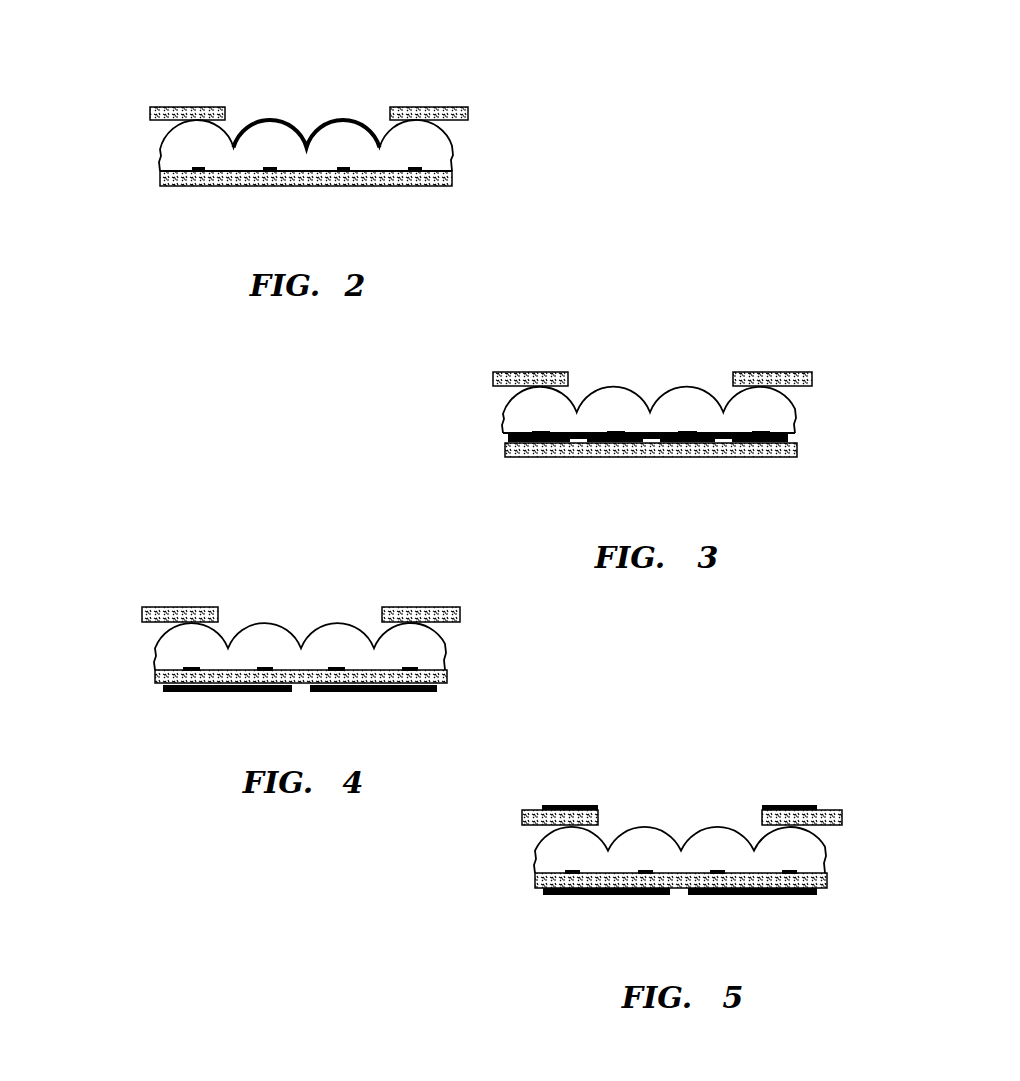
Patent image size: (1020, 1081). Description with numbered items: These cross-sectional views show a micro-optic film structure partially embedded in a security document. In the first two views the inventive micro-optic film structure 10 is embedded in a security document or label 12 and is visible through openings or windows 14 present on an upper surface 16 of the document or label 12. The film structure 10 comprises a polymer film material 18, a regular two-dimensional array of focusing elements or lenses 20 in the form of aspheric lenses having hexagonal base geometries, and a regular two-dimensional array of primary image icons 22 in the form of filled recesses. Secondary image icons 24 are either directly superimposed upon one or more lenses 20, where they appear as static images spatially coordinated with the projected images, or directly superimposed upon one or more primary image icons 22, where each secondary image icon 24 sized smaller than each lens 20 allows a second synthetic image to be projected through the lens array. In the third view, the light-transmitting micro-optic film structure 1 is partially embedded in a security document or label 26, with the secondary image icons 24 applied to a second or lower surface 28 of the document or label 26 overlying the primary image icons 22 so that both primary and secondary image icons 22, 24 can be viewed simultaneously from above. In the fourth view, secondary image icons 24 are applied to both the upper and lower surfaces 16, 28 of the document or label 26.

In FIG. 4, the micro-optic film structure 1 is at (156, 646).
In FIG. 5, the micro-optic film structure 1 is at (536, 849).
In FIG. 2, the micro-optic film structure 10 is at (300, 127).
In FIG. 3, the micro-optic film structure 10 is at (637, 389).
In FIG. 2, the security document or label 12 is at (468, 117).
In FIG. 3, the security document or label 12 is at (812, 382).
In FIG. 2, the openings or windows 14 is at (273, 93).
In FIG. 3, the openings or windows 14 is at (649, 349).
In FIG. 2, the upper surface 16 is at (195, 107).
In FIG. 3, the upper surface 16 is at (533, 372).
In FIG. 4, the upper surface 16 is at (183, 607).
In FIG. 5, the upper surface 16 is at (540, 810).
In FIG. 2, the polymer film material 18 is at (362, 166).
In FIG. 3, the polymer film material 18 is at (703, 432).
In FIG. 2, the focusing elements or lenses 20 is at (163, 146).
In FIG. 3, the focusing elements or lenses 20 is at (693, 388).
In FIG. 2, the primary image icons 22 is at (205, 185).
In FIG. 3, the primary image icons 22 is at (606, 431).
In FIG. 4, the primary image icons 22 is at (266, 667).
In FIG. 5, the primary image icons 22 is at (645, 870).
In FIG. 2, the secondary image icons 24 is at (345, 121).
In FIG. 3, the secondary image icons 24 is at (532, 444).
In FIG. 4, the secondary image icons 24 is at (260, 692).
In FIG. 5, the secondary image icons 24 is at (570, 805).
In FIG. 4, the security document or label 26 is at (276, 646).
In FIG. 5, the security document or label 26 is at (682, 831).
In FIG. 4, the second or lower surface 28 is at (447, 677).
In FIG. 5, the second or lower surface 28 is at (827, 881).